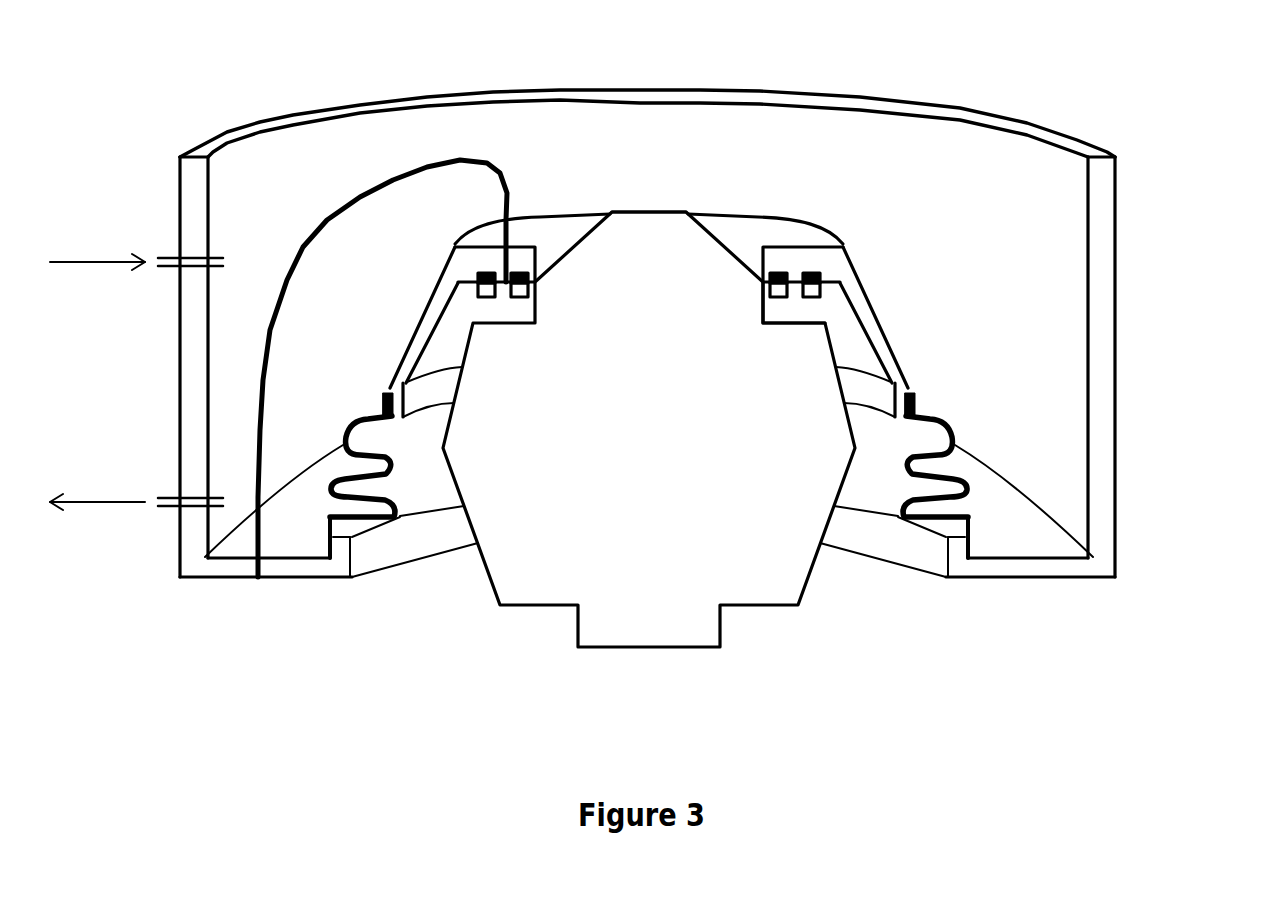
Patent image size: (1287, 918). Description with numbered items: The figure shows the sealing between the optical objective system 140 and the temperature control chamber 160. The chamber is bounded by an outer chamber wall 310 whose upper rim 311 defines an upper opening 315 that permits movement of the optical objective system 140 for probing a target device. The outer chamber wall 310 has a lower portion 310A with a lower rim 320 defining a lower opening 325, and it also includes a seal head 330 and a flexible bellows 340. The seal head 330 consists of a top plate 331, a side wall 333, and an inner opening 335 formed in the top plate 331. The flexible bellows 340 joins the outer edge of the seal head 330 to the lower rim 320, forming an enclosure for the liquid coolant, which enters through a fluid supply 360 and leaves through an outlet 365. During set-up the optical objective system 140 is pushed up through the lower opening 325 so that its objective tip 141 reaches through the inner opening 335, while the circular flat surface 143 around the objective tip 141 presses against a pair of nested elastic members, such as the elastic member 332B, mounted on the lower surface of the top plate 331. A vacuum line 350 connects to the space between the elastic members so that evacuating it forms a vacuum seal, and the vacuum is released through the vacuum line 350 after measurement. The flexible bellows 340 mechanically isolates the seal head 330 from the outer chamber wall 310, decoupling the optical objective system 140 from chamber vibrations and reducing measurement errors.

The optical objective system 140 is at (677, 455).
The objective tip 141 is at (642, 223).
The flat surface 143 is at (810, 320).
The temperature control chamber 160 is at (1118, 352).
The outer chamber wall 310 is at (1103, 210).
The lower portion 310A is at (1045, 562).
The upper rim 311 is at (1050, 127).
The upper opening 315 is at (912, 150).
The lower rim 320 is at (955, 567).
The lower opening 325 is at (878, 558).
The seal head 330 is at (882, 333).
The top plate 331 is at (792, 235).
The elastic member 332B is at (480, 277).
The side wall 333 is at (890, 347).
The inner opening 335 is at (730, 242).
The flexible bellows 340 is at (357, 427).
The vacuum line 350 is at (340, 210).
The fluid supply 360 is at (158, 253).
The outlet 365 is at (158, 497).